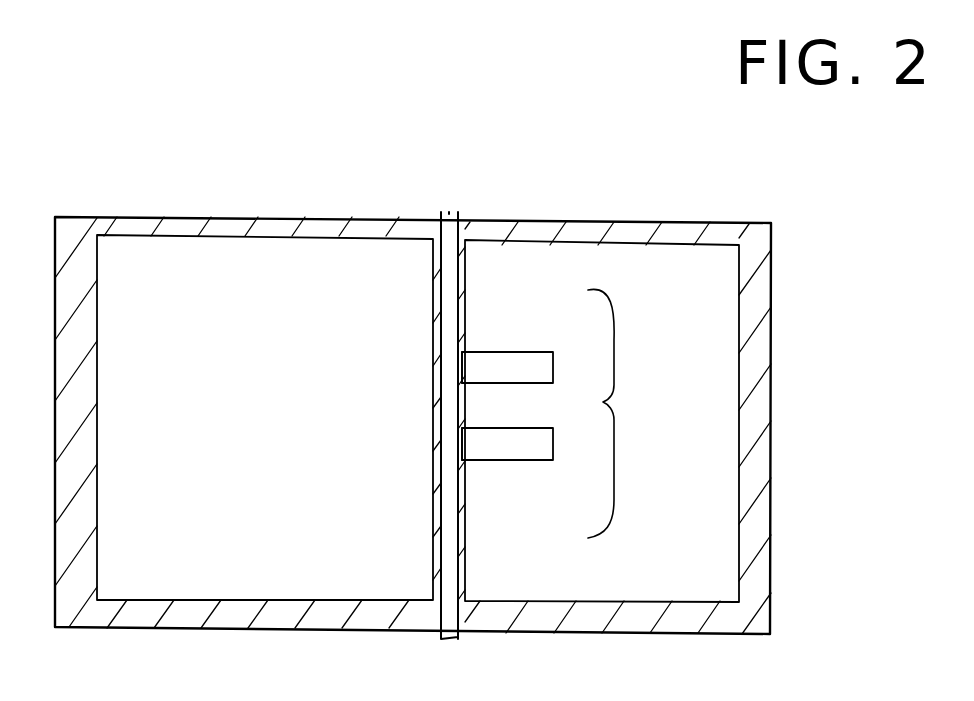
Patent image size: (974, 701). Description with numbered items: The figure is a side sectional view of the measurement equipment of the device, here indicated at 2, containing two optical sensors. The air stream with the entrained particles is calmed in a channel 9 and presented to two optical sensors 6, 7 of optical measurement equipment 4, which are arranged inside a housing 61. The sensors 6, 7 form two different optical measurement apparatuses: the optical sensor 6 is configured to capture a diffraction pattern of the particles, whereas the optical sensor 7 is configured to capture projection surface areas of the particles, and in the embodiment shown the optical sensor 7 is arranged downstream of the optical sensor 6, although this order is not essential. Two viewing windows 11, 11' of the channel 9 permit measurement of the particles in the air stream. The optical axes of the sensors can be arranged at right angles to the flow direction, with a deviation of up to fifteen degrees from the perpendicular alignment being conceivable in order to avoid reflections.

The device / housing arrangement 2 is at (448, 162).
The optical measurement equipment 4 is at (617, 413).
The optical sensor 6 is at (526, 358).
The optical sensor 7 is at (531, 450).
The channel 9 is at (447, 297).
The viewing window 11 is at (494, 333).
The viewing window 11' is at (496, 472).
The housing 61 is at (760, 337).